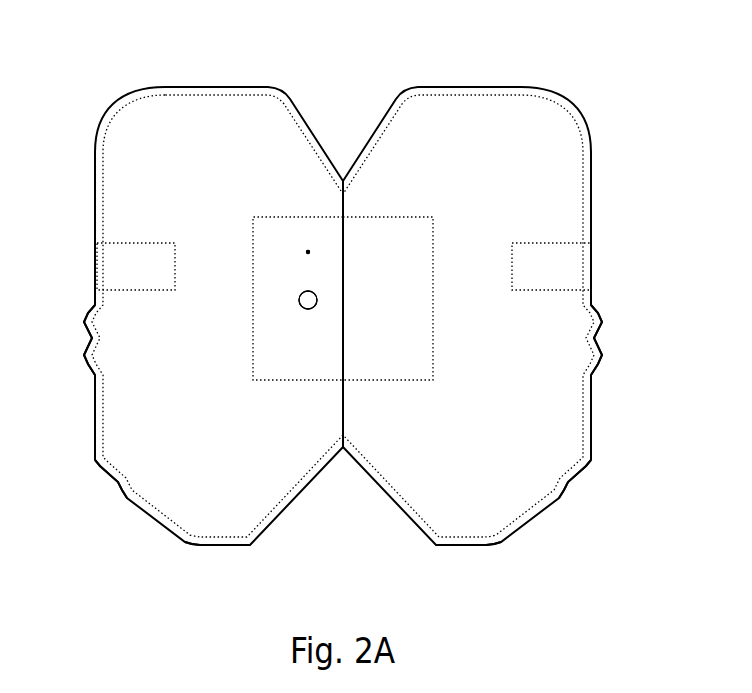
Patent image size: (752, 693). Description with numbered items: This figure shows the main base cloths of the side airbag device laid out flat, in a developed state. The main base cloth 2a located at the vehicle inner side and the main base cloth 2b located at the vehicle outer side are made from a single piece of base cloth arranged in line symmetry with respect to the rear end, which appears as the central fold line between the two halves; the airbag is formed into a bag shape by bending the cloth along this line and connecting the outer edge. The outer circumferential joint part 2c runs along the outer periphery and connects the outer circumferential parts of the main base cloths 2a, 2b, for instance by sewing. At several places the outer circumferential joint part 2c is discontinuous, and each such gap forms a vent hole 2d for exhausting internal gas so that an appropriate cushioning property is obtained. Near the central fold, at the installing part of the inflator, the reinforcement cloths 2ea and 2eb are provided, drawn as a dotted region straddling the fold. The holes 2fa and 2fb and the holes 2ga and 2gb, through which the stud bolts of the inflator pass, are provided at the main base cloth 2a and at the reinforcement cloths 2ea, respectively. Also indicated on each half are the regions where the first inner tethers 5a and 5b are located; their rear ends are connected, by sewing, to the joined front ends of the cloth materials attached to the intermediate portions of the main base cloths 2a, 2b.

The main base cloth 2a is at (220, 513).
The main base cloth 2b is at (460, 520).
The outer circumferential joint part 2c is at (196, 93).
The vent hole 2d is at (90, 340).
The reinforcement cloth 2ea is at (305, 226).
The reinforcement cloth 2eb is at (399, 228).
The hole 2fa is at (306, 251).
The hole 2ga is at (306, 251).
The hole 2fb is at (300, 306).
The hole 2gb is at (300, 306).
The first inner tether 5a is at (122, 272).
The first inner tether 5b is at (570, 270).